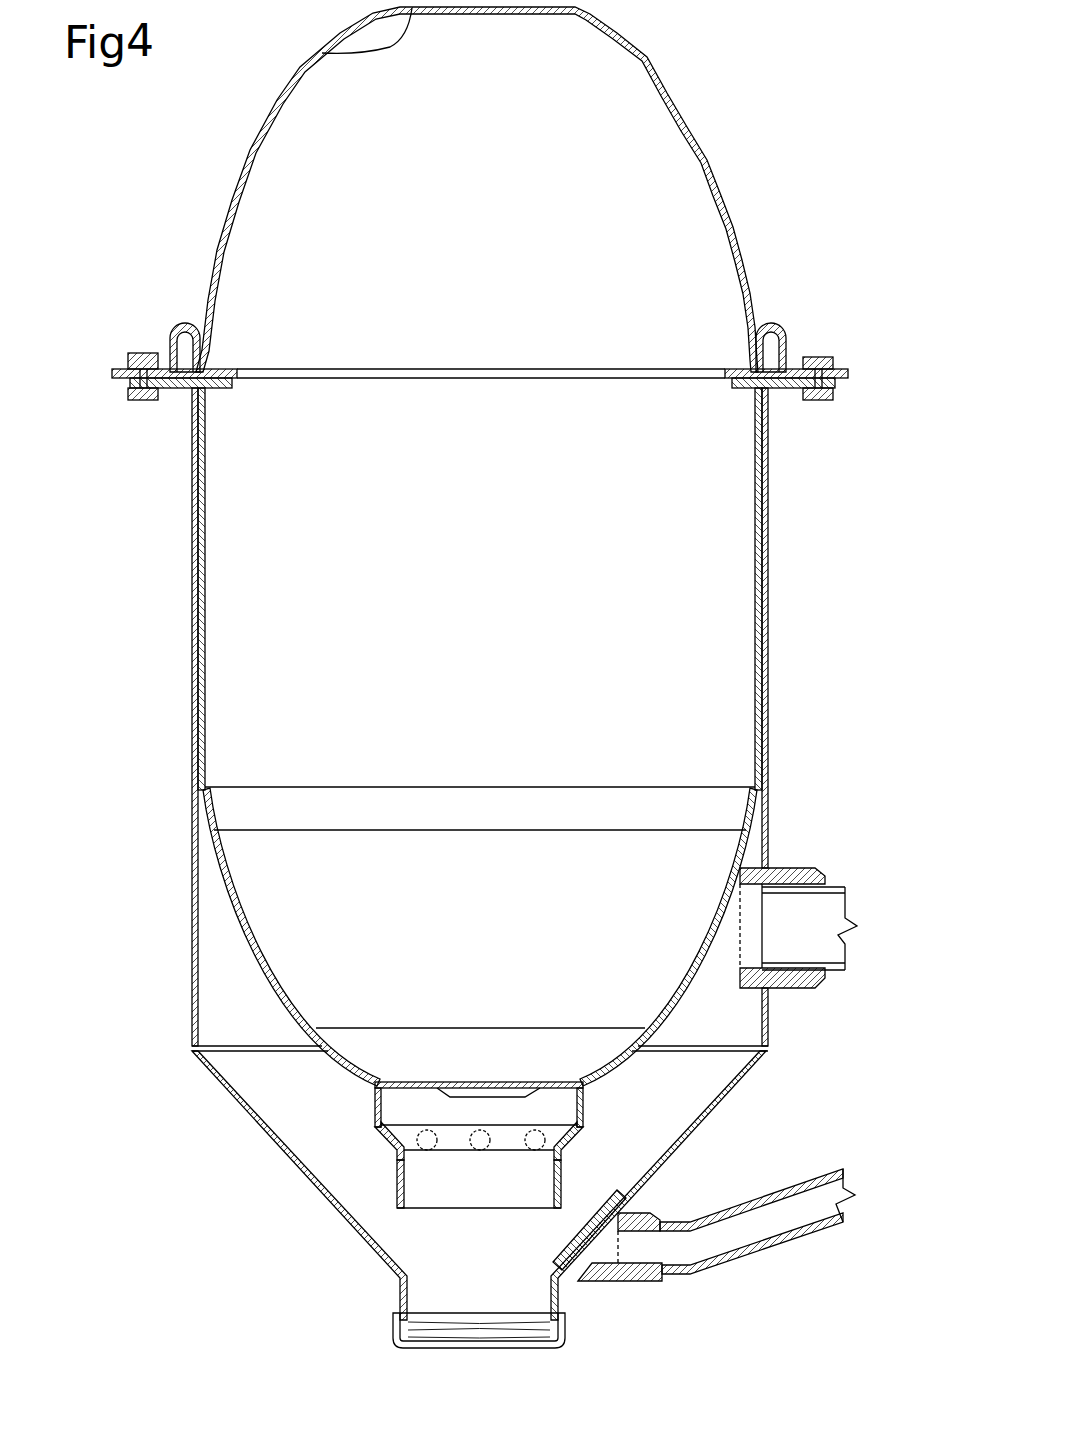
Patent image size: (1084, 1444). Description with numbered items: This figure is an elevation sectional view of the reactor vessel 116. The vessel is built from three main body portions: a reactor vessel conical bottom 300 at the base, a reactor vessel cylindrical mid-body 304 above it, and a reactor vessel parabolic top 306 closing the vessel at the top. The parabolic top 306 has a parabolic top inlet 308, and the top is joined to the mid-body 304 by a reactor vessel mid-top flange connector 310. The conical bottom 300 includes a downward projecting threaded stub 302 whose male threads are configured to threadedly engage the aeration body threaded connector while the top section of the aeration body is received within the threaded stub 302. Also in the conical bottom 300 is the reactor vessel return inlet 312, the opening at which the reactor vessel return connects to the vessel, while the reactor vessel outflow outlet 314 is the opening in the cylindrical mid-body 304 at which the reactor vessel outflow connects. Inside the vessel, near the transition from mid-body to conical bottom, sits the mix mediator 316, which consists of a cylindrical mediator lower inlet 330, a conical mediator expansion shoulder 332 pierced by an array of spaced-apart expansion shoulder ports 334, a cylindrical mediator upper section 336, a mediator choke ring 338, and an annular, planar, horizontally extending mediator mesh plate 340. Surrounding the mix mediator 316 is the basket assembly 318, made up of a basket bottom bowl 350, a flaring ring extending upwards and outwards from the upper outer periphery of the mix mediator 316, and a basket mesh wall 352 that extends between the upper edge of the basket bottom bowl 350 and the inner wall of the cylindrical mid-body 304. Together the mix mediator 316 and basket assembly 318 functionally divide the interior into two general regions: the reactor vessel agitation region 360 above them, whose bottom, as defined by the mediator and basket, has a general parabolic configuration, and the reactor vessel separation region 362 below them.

The reactor vessel 116 is at (772, 118).
The reactor vessel conical bottom 300 is at (330, 1200).
The threaded stub 302 is at (393, 1317).
The reactor vessel cylindrical mid-body 304 is at (192, 983).
The reactor vessel parabolic top 306 is at (237, 186).
The parabolic top inlet 308 is at (330, 53).
The reactor vessel mid-top flange connector 310 is at (166, 390).
The reactor vessel return inlet 312 is at (578, 1250).
The reactor vessel outflow outlet 314 is at (762, 878).
The mix mediator 316 is at (596, 1118).
The basket assembly 318 is at (618, 1060).
The mediator lower inlet 330 is at (398, 1188).
The mediator expansion shoulder 332 is at (397, 1150).
The expansion shoulder ports 334 is at (380, 1110).
The mediator upper section 336 is at (428, 1150).
The mediator choke ring 338 is at (437, 1085).
The mediator mesh plate 340 is at (380, 1085).
The basket bottom bowl 350 is at (625, 1065).
The basket mesh wall 352 is at (656, 1029).
The reactor vessel agitation region 360 is at (700, 607).
The reactor vessel separation region 362 is at (622, 1150).